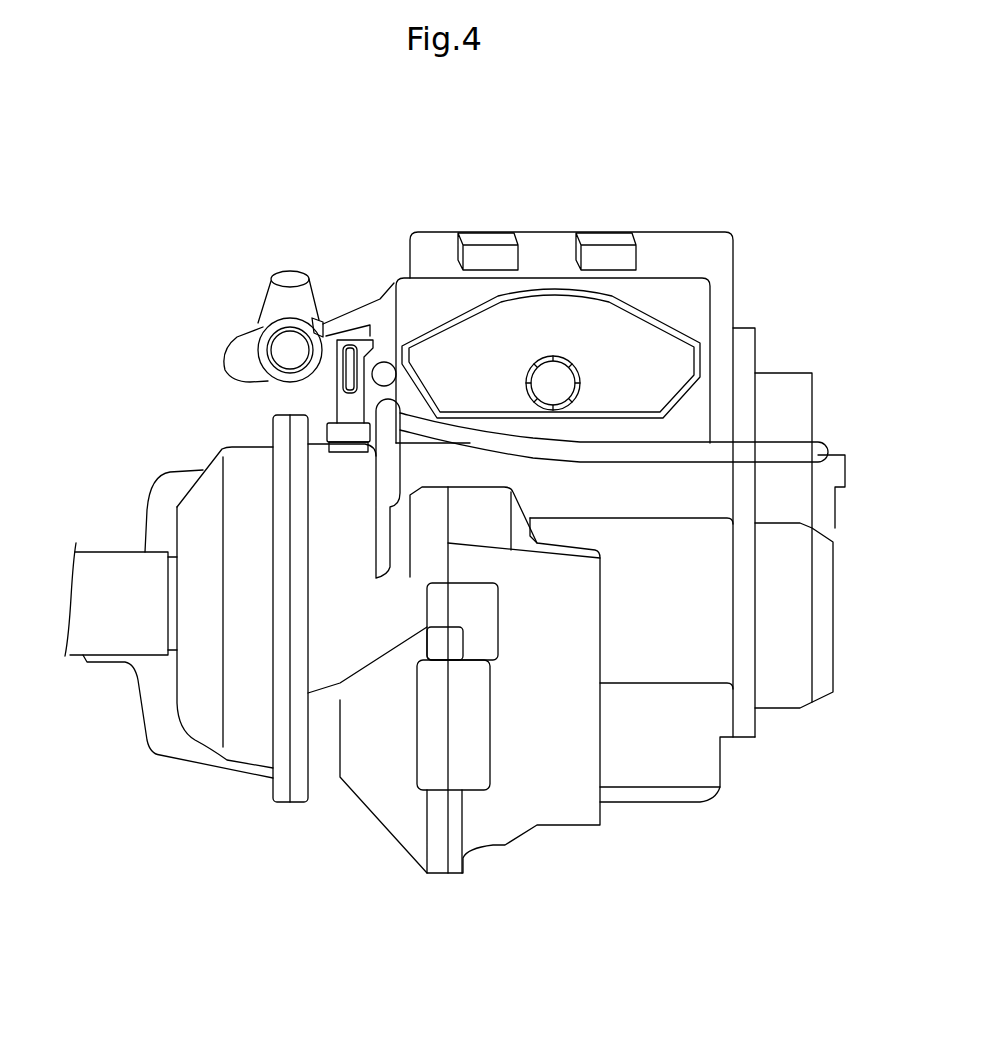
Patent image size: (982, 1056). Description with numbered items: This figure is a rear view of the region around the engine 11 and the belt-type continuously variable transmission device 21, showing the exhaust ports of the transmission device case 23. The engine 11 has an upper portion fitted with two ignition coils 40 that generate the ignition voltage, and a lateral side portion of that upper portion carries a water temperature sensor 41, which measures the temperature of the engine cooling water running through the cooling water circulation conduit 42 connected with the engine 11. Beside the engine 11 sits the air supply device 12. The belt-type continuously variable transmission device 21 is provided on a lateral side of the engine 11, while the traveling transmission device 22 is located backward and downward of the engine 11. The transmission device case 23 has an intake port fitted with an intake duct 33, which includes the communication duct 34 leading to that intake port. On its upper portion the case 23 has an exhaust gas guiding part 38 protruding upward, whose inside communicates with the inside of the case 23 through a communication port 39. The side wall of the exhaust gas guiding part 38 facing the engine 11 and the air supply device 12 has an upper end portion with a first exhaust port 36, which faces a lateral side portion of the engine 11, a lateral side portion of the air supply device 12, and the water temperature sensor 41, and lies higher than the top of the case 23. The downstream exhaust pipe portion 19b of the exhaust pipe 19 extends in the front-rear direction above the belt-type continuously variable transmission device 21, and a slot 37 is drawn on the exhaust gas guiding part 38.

The engine 11 is at (800, 407).
The air supply device 12 is at (657, 288).
The exhaust pipe 19 is at (233, 338).
The downstream exhaust pipe portion 19b is at (222, 324).
The belt-type continuously variable transmission device 21 is at (203, 455).
The traveling transmission device 22 is at (480, 840).
The transmission device case 23 is at (203, 710).
The intake duct 33 is at (110, 660).
The communication duct 34 is at (121, 662).
The first exhaust port 36 is at (372, 352).
The slot 37 is at (346, 343).
The exhaust gas guiding part 38 is at (345, 409).
The communication port 39 is at (337, 445).
The ignition coil 40 is at (489, 250).
The water temperature sensor 41 is at (386, 378).
The cooling water circulation conduit 42 is at (693, 457).